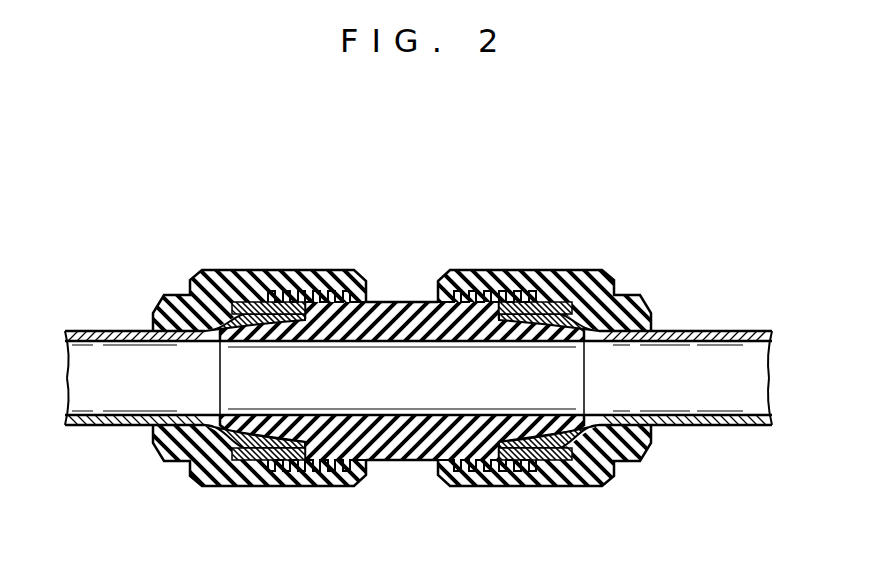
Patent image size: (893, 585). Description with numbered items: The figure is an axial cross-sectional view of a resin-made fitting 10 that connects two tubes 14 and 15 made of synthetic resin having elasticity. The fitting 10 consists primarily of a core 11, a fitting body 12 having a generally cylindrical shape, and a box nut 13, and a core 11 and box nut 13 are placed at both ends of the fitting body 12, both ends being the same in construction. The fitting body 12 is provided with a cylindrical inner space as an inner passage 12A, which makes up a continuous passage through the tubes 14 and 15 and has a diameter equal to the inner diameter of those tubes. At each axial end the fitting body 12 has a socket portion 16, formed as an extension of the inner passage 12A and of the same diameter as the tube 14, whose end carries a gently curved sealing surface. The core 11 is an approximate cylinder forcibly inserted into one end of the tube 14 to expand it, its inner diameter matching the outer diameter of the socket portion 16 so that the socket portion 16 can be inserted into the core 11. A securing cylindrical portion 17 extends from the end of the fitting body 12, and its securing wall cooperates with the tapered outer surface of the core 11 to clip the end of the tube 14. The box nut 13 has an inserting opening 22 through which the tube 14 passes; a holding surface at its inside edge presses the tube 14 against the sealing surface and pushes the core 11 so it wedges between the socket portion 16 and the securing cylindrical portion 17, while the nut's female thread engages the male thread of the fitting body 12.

The fitting 10 is at (402, 343).
The core 11 is at (272, 303).
The fitting body 12 is at (417, 302).
The inner passage 12A is at (421, 415).
The box nut 13 is at (331, 271).
The tube 14 is at (122, 330).
The tube 15 is at (736, 331).
The socket portion 16 is at (262, 340).
The securing cylindrical portion 17 is at (304, 470).
The inserting opening 22 is at (193, 412).